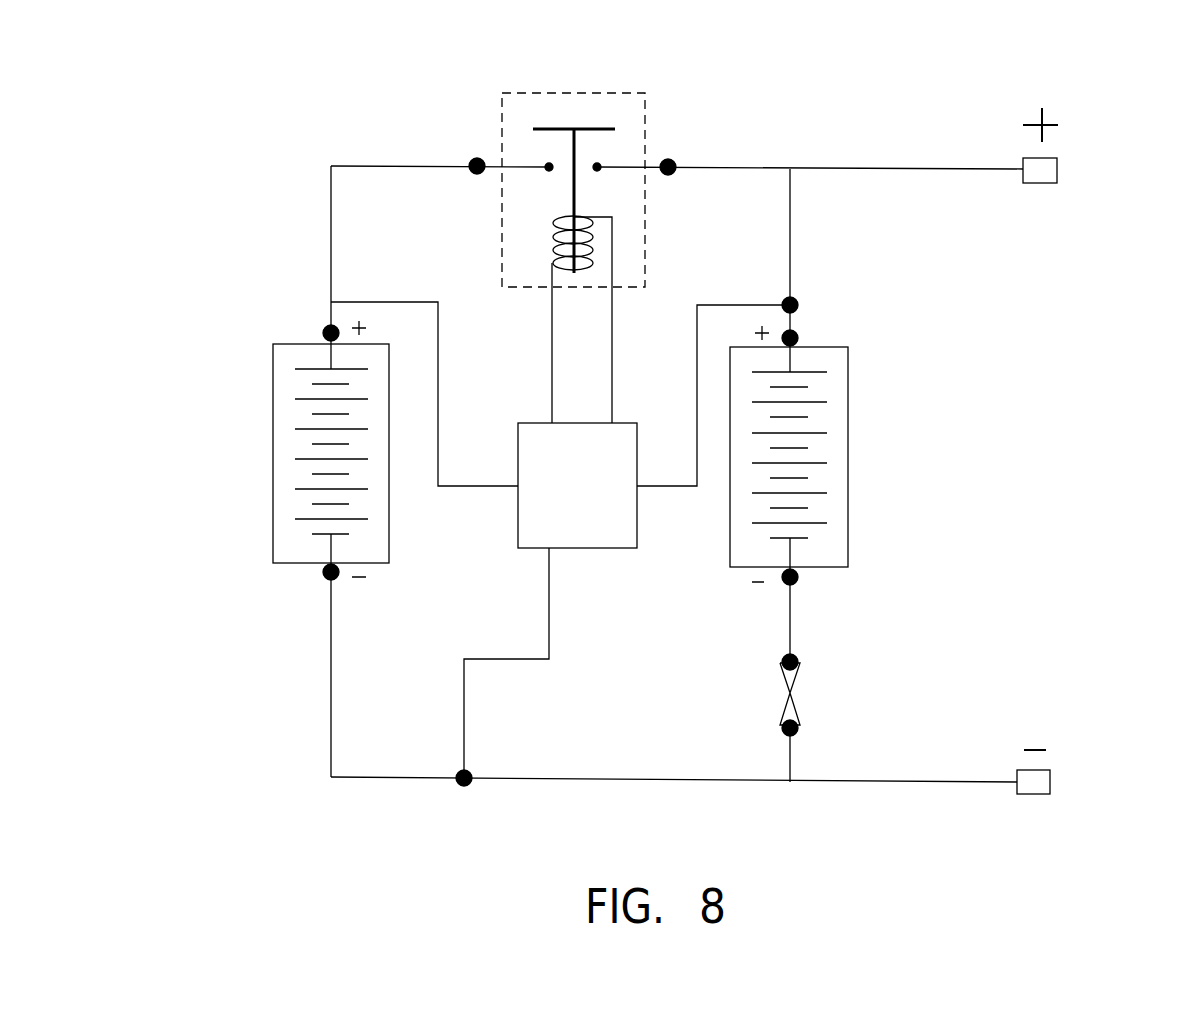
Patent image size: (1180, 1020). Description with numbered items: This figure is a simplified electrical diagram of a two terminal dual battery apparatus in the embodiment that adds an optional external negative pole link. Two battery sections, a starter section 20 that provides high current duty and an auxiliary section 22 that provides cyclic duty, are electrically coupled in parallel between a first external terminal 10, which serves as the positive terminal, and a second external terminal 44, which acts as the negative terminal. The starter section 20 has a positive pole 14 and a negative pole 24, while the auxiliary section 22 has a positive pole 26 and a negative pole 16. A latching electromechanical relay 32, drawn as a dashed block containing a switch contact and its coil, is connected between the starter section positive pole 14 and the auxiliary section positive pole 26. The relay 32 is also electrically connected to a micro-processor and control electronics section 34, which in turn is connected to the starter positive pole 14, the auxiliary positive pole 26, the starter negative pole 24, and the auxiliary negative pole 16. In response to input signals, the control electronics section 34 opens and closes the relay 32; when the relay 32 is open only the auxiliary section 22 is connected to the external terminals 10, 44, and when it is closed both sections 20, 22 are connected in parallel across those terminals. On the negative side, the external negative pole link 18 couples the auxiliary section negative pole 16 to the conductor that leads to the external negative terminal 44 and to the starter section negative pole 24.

The first external terminal 10 is at (1057, 171).
The second external terminal 44 is at (1060, 781).
The latching electromechanical relay 32 is at (555, 95).
The micro-processor and control electronics section 34 is at (532, 510).
The starter section 20 is at (283, 507).
The auxiliary section 22 is at (833, 478).
The positive pole 14 is at (323, 332).
The negative pole 24 is at (312, 582).
The positive pole 26 is at (810, 329).
The negative pole 16 is at (806, 589).
The external negative pole link 18 is at (804, 692).